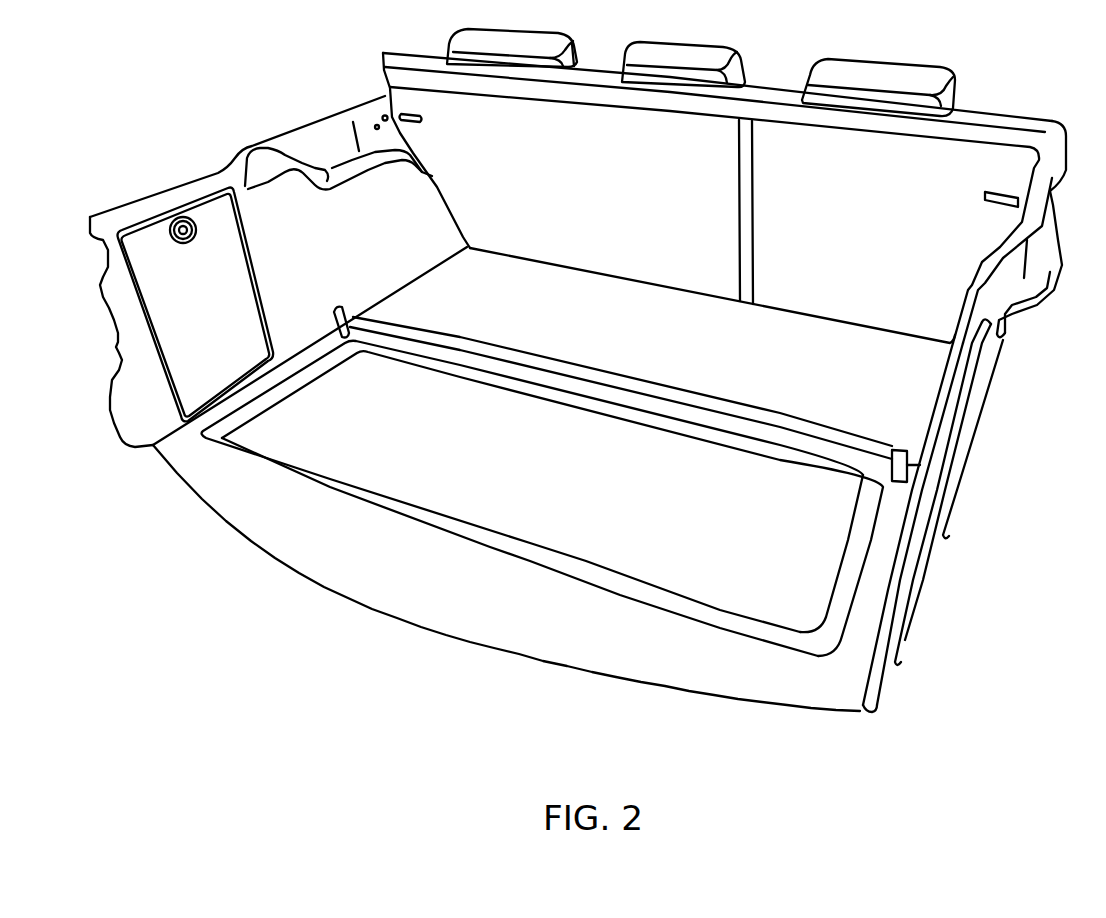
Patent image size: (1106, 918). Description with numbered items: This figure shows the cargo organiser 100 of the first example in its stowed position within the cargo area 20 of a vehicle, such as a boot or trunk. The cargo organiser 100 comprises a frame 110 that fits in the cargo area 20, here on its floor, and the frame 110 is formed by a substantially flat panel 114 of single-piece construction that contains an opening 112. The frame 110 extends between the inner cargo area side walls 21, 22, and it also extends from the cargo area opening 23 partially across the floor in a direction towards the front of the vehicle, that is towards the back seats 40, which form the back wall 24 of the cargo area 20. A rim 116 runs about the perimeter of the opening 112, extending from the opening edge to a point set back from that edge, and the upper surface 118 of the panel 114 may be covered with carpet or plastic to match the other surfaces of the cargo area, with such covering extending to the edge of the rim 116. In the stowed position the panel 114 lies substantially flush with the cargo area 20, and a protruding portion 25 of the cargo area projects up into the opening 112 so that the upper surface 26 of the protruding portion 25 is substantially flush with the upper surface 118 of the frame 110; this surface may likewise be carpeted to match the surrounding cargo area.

The cargo area 20 is at (943, 320).
The inner cargo area side wall 21 is at (273, 250).
The inner cargo area side wall 22 is at (938, 400).
The cargo area opening 23 is at (360, 603).
The back wall 24 is at (713, 150).
The protruding portion 25 is at (380, 455).
The upper surface of protruding portion 26 is at (280, 440).
The back seats 40 is at (943, 173).
The cargo organiser 100 is at (889, 534).
The frame 110 is at (867, 650).
The opening 112 is at (813, 583).
The panel 114 is at (887, 553).
The rim 116 is at (732, 623).
The upper surface 118 is at (840, 683).